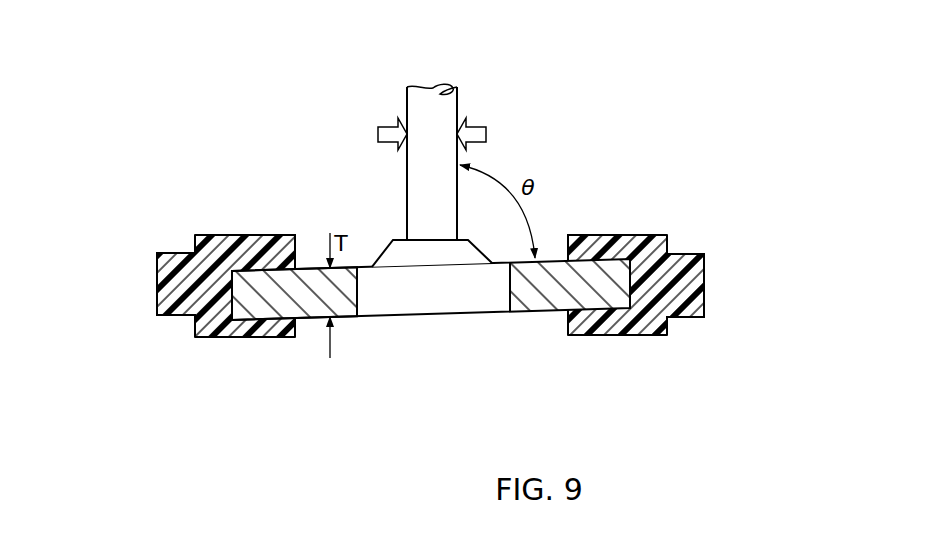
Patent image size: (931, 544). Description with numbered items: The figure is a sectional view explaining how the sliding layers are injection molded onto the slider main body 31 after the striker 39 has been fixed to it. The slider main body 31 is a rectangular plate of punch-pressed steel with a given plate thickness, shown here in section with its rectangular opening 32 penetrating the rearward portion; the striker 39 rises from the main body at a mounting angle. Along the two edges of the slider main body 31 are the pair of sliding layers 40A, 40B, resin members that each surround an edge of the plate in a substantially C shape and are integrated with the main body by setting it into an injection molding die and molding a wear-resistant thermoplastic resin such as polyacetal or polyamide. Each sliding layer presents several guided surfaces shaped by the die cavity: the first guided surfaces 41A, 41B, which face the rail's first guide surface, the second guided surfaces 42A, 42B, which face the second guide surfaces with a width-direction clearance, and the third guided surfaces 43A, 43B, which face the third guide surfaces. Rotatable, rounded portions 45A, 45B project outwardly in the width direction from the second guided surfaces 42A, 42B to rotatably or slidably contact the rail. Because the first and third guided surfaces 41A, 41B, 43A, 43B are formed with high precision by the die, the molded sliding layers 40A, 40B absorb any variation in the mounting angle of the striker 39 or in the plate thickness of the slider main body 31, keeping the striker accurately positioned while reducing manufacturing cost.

The slider main body 31 is at (525, 297).
The opening 32 is at (358, 297).
The striker 39 is at (430, 117).
The sliding layer 40A is at (294, 236).
The sliding layer 40B is at (567, 233).
The first guided surface 41A is at (262, 338).
The first guided surface 41B is at (600, 338).
The second guided surface 42A is at (193, 328).
The second guided surface 42B is at (668, 328).
The third guided surface 43A is at (213, 234).
The third guided surface 43B is at (648, 235).
The rotatable portion 45A is at (170, 288).
The rotatable portion 45B is at (683, 288).